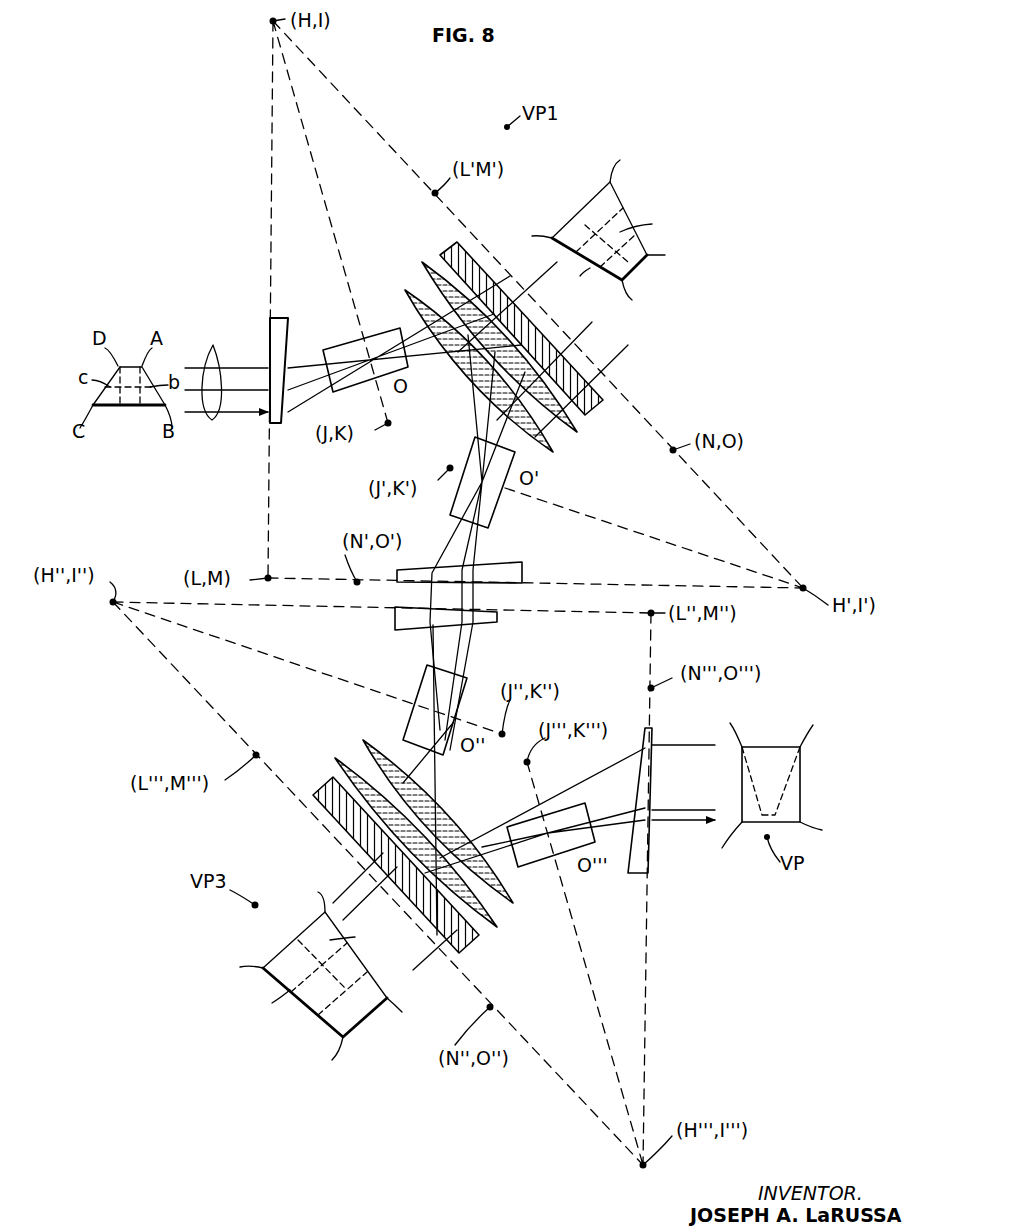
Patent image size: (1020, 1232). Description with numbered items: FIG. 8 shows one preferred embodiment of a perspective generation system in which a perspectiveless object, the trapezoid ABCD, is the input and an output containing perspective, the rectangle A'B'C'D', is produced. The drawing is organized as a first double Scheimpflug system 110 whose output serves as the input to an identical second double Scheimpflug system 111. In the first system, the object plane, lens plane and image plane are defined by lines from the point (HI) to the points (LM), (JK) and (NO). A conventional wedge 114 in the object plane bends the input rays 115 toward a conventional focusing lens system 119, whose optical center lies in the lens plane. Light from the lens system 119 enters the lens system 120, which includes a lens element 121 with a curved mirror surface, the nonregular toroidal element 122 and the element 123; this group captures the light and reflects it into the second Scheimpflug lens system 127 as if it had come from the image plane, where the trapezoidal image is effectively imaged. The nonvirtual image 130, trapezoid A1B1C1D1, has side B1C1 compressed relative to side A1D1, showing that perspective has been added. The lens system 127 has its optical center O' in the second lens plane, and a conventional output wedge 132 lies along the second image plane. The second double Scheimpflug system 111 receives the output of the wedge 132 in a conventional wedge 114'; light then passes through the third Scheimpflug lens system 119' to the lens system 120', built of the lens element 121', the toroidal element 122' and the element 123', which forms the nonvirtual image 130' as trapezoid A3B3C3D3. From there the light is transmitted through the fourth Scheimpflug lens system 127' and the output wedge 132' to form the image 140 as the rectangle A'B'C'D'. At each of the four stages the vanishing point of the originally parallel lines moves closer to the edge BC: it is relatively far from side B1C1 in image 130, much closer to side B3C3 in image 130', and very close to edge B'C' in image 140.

The first double Scheimpflug system 110 is at (400, 112).
The second double Scheimpflug system 111 is at (180, 722).
The wedge 114 is at (255, 348).
The wedge 114' is at (474, 627).
The input rays 115 is at (213, 345).
The focusing lens system 119 is at (360, 349).
The third Scheimpflug lens system 119' is at (413, 703).
The lens system 120 is at (528, 350).
The lens system 120' is at (412, 839).
The lens element 121 is at (537, 339).
The lens element 121' is at (378, 858).
The nonregular toroidal element 122 is at (528, 362).
The nonregular toroidal element 122' is at (383, 818).
The element 123 is at (501, 386).
The element 123' is at (423, 801).
The second Scheimpflug lens system 127 is at (504, 483).
The fourth Scheimpflug lens system 127' is at (527, 826).
The nonvirtual image 130 is at (617, 228).
The nonvirtual image 130' is at (315, 982).
The output wedge 132 is at (484, 563).
The output wedge 132' is at (666, 822).
The image 140 is at (814, 782).